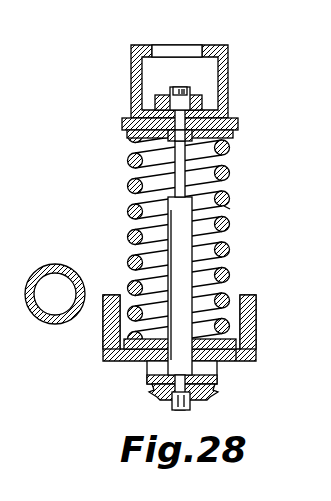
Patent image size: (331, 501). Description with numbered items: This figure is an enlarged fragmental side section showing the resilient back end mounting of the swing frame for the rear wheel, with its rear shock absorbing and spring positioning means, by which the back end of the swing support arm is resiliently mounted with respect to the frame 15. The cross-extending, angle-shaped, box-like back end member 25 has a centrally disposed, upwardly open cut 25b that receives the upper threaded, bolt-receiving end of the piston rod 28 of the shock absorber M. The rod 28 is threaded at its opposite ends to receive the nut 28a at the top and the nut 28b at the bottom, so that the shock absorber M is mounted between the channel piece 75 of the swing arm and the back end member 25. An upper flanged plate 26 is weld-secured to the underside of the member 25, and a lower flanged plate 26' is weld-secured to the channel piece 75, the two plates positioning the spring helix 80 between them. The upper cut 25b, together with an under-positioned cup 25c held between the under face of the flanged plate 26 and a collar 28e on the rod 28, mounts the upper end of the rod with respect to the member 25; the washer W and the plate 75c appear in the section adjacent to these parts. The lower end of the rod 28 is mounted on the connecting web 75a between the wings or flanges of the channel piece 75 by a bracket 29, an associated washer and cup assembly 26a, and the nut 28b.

The back end member 25 is at (230, 56).
The upwardly open cut 25b is at (163, 44).
The cup 25c is at (203, 103).
The nut 28a is at (168, 93).
The washer plate W is at (233, 117).
The upper flanged plate 26 is at (204, 137).
The collar 28e is at (168, 146).
The piston rod 28 is at (226, 181).
The shock absorber M is at (230, 209).
The spring helix 80 is at (226, 250).
The frame 15 is at (55, 264).
The channel piece 75 is at (120, 296).
The lower flanged plate 26' is at (200, 328).
The bottom plate 75c is at (146, 359).
The bracket 29 is at (147, 373).
The connecting web 75a is at (236, 362).
The washer and cup assembly 26a is at (170, 403).
The nut 28b is at (212, 398).